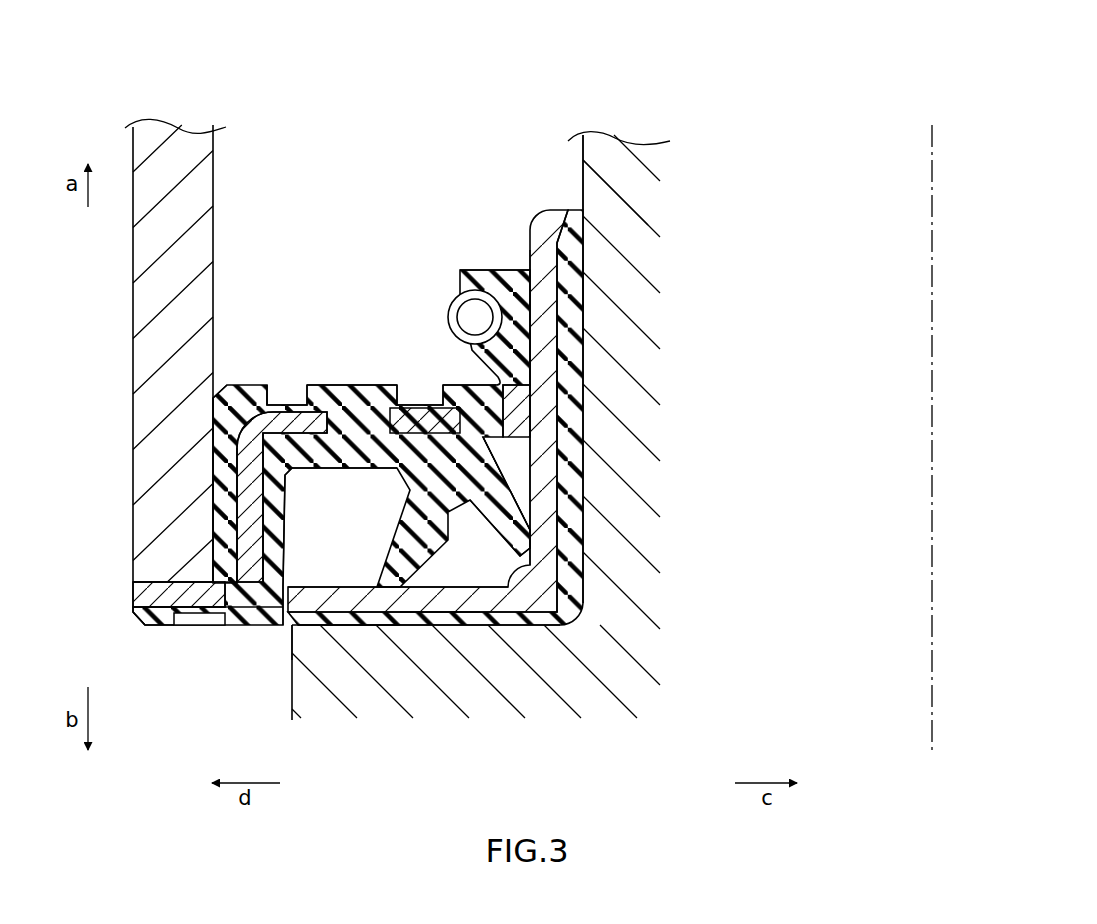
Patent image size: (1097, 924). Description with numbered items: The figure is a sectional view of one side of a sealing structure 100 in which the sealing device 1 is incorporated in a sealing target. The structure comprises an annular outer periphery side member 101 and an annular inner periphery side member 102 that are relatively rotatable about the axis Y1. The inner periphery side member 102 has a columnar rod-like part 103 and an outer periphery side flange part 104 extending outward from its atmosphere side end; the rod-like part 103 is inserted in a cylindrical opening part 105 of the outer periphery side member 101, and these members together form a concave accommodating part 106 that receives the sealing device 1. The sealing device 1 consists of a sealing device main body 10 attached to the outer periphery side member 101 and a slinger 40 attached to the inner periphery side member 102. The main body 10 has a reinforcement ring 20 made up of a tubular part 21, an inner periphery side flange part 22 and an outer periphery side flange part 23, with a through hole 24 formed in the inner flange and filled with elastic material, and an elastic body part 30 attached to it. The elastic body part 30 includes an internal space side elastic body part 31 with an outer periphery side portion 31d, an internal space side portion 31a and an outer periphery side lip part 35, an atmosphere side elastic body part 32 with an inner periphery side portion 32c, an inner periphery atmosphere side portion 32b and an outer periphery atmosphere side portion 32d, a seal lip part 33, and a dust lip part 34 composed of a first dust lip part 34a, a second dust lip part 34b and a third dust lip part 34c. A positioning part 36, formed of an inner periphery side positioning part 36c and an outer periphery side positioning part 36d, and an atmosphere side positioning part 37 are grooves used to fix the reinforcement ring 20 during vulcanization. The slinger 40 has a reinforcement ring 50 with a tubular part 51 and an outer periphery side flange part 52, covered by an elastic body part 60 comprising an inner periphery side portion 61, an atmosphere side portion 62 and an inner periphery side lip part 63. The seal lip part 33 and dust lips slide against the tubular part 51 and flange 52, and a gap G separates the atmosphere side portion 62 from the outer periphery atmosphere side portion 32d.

The sealing device 1 is at (384, 433).
The sealing device main body 10 is at (371, 446).
The reinforcement ring 20 is at (350, 464).
The tubular part 21 is at (247, 477).
The inner periphery side flange part 22 is at (540, 398).
The outer periphery side flange part 23 is at (143, 595).
The through hole 24 is at (356, 452).
The elastic body part 30 is at (371, 446).
The internal space side elastic body part 31 is at (375, 378).
The internal space side portion 31a is at (394, 380).
The outer periphery side portion 31d is at (228, 462).
The atmosphere side elastic body part 32 is at (312, 482).
The inner periphery atmosphere side portion 32b is at (360, 452).
The inner periphery side portion 32c is at (270, 540).
The outer periphery atmosphere side portion 32d is at (153, 628).
The seal lip part 33 is at (470, 262).
The dust lip part 34 is at (527, 554).
The first dust lip part 34a is at (525, 460).
The second dust lip part 34b is at (527, 535).
The third dust lip part 34c is at (376, 614).
The outer periphery side lip part 35 is at (213, 423).
The positioning part 36 is at (300, 377).
The inner periphery side positioning part 36c is at (418, 393).
The outer periphery side positioning part 36d is at (273, 393).
The atmosphere side positioning part 37 is at (196, 622).
The slinger 40 is at (490, 433).
The reinforcement ring 50 is at (472, 448).
The tubular part 51 is at (542, 413).
The outer periphery side flange part 52 is at (447, 614).
The elastic body part 60 is at (490, 463).
The inner periphery side portion 61 is at (577, 363).
The atmosphere side portion 62 is at (322, 627).
The inner periphery side lip part 63 is at (582, 292).
The sealing structure 100 is at (687, 98).
The outer periphery side member 101 is at (180, 150).
The inner periphery side member 102 is at (568, 106).
The rod-like part 103 is at (632, 181).
The outer periphery side flange part 104 is at (468, 697).
The opening part 105 is at (281, 88).
The accommodating part 106 is at (566, 140).
The gap G is at (279, 608).
The axis Y1 is at (930, 133).